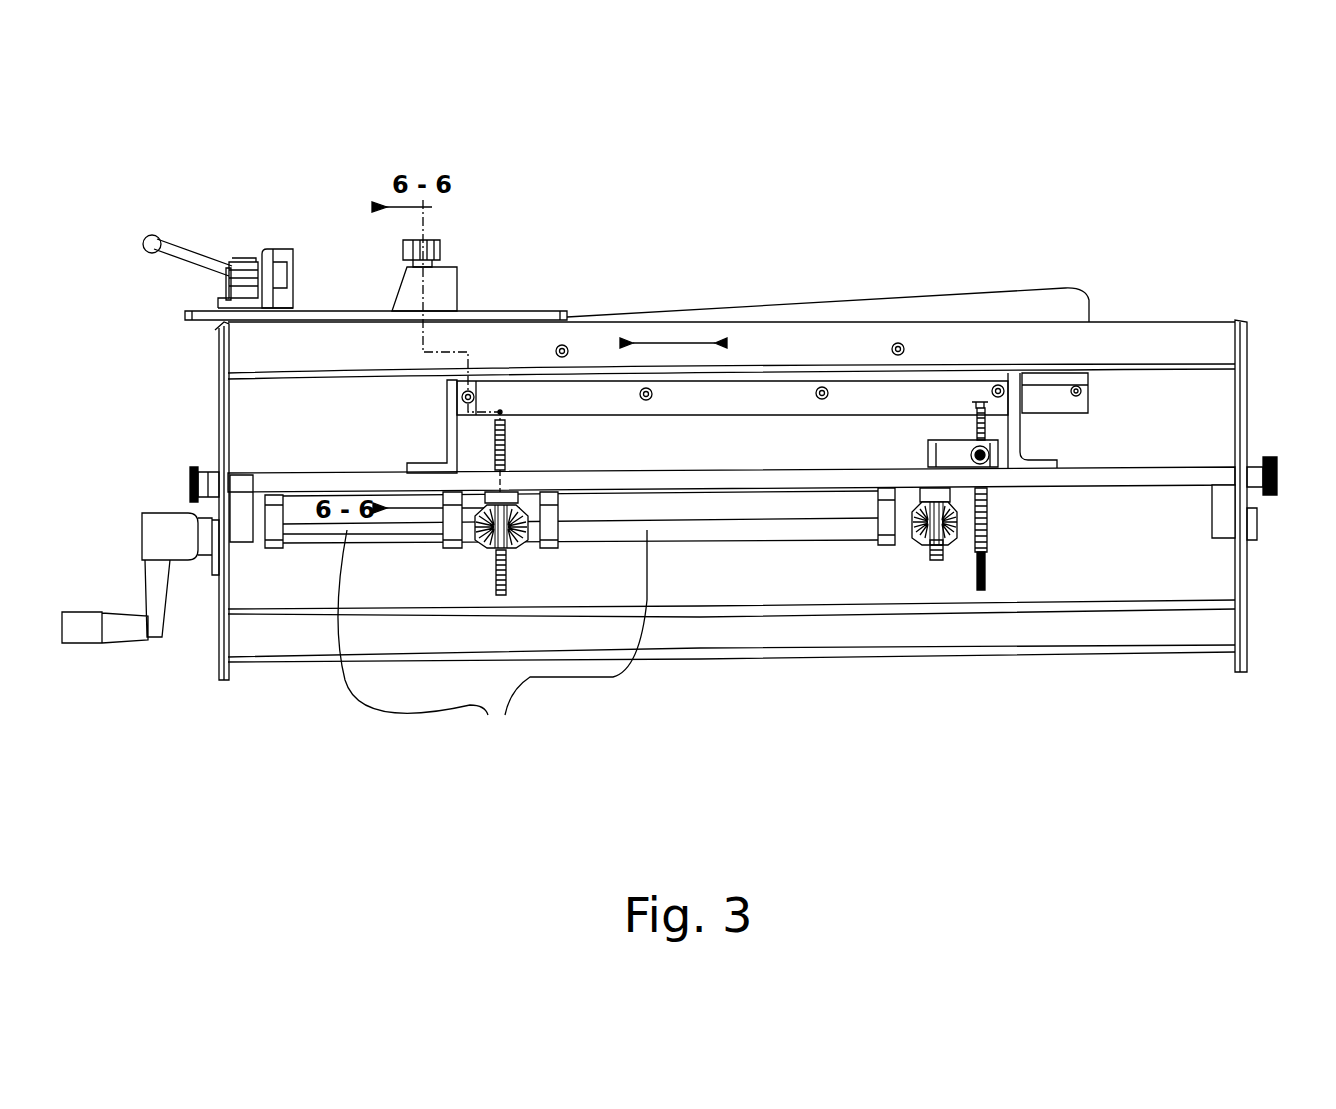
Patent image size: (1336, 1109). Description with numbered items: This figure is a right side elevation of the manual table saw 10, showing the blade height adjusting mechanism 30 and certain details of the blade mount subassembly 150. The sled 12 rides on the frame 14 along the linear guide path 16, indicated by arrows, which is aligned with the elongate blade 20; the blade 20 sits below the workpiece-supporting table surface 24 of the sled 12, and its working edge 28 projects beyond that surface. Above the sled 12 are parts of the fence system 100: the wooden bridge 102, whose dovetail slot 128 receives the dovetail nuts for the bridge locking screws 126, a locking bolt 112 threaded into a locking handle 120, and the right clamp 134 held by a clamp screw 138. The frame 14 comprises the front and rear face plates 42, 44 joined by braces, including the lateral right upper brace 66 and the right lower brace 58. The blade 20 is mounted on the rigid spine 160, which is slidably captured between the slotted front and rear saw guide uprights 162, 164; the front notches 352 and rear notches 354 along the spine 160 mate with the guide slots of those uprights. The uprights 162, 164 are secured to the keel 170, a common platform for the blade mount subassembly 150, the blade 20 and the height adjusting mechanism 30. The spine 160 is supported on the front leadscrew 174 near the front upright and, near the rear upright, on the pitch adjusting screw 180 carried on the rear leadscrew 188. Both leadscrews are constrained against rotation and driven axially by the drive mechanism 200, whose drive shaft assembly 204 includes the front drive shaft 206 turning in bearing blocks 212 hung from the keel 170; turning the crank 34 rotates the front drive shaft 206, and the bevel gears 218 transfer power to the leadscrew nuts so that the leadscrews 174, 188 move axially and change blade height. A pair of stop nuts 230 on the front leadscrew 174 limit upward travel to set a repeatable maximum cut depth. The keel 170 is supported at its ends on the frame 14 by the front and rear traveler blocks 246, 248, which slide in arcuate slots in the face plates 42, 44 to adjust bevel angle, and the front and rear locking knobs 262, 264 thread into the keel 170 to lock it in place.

The table saw 10 is at (1117, 222).
The sled 12 is at (562, 254).
The frame 14 is at (1172, 286).
The guide path 16 is at (670, 340).
The blade 20 is at (975, 300).
The table surface 24 is at (555, 298).
The working edge 28 is at (902, 292).
The blade height adjusting mechanism 30 is at (465, 592).
The crank 34 is at (95, 550).
The front face plate 42 is at (222, 682).
The rear face plate 44 is at (1238, 665).
The right lower brace 58 is at (1047, 628).
The lateral right upper brace 66 is at (1147, 352).
The fence system 100 is at (272, 176).
The bridge 102 is at (292, 302).
The locking bolt 112 is at (242, 262).
The locking handle 120 is at (240, 258).
The bridge locking screw 126 is at (227, 278).
The dovetail slot 128 is at (284, 272).
The right clamp 134 is at (447, 284).
The clamp screw 138 is at (441, 250).
The blade mount subassembly 150 is at (1118, 410).
The spine 160 is at (838, 404).
The front saw guide upright 162 is at (445, 455).
The rear saw guide upright 164 is at (1014, 430).
The keel 170 is at (1060, 480).
The front leadscrew 174 is at (506, 442).
The pitch adjusting screw 180 is at (988, 538).
The rear leadscrew 188 is at (948, 535).
The drive mechanism 200 is at (669, 539).
The drive shaft assembly 204 is at (580, 617).
The front drive shaft 206 is at (300, 540).
The bearing block 212 is at (272, 550).
The bevel gear 218 is at (512, 494).
The stop nut 230 is at (508, 570).
The front traveler block 246 is at (242, 498).
The rear traveler block 248 is at (1222, 518).
The front locking knob 262 is at (207, 480).
The rear locking knob 264 is at (1252, 460).
The front notch 352 is at (460, 397).
The rear notch 354 is at (1068, 400).